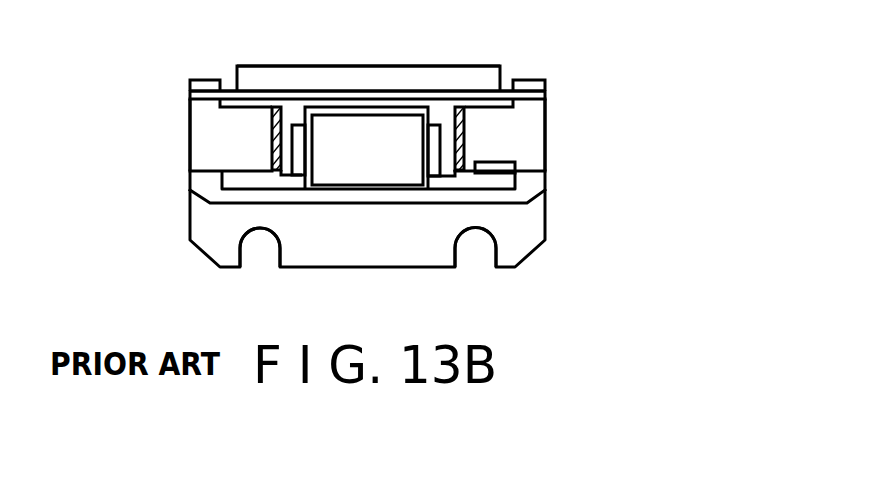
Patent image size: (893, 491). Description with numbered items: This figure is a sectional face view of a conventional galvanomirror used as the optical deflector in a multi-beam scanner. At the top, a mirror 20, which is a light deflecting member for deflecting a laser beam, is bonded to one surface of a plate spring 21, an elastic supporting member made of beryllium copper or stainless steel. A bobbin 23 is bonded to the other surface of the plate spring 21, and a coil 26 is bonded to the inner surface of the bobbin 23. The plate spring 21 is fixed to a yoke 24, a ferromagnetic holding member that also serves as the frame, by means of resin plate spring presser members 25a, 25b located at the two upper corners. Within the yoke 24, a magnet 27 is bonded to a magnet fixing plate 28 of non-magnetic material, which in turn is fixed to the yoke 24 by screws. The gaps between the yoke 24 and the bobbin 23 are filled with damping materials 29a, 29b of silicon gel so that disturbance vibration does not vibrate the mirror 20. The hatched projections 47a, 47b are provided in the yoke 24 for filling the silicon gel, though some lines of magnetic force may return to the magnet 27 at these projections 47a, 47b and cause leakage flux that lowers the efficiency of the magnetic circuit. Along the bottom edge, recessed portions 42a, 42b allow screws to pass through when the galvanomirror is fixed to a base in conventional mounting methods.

The mirror 20 is at (360, 82).
The plate spring 21 is at (449, 80).
The bobbin 23 is at (290, 103).
The yoke 24 is at (532, 142).
The plate spring presser member 25a is at (203, 82).
The plate spring presser member 25b is at (529, 82).
The coil 26 is at (297, 158).
The magnet 27 is at (393, 172).
The magnet fixing plate 28 is at (358, 250).
The damping material 29a is at (268, 140).
The damping material 29b is at (465, 127).
The recessed portion 42a is at (245, 247).
The recessed portion 42b is at (488, 252).
The projection 47a is at (262, 122).
The projection 47b is at (470, 150).